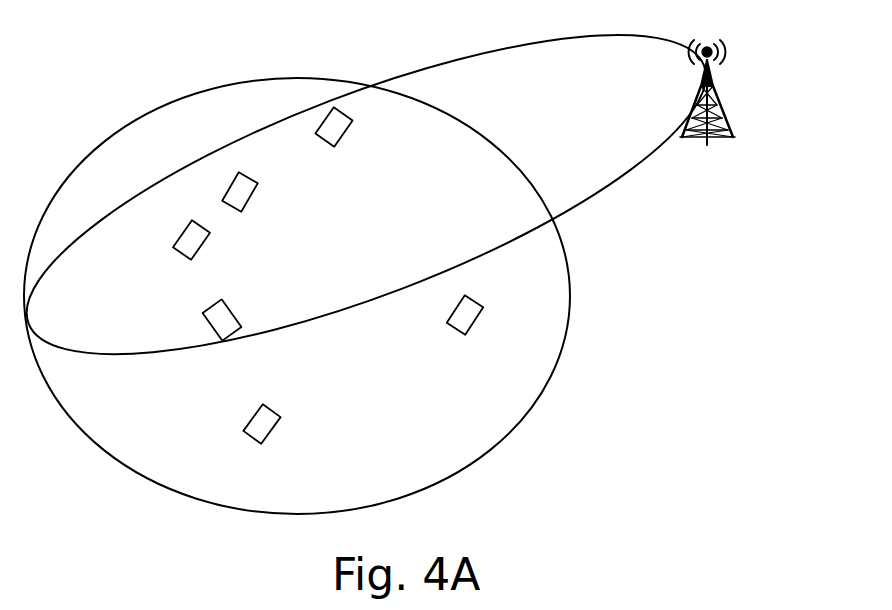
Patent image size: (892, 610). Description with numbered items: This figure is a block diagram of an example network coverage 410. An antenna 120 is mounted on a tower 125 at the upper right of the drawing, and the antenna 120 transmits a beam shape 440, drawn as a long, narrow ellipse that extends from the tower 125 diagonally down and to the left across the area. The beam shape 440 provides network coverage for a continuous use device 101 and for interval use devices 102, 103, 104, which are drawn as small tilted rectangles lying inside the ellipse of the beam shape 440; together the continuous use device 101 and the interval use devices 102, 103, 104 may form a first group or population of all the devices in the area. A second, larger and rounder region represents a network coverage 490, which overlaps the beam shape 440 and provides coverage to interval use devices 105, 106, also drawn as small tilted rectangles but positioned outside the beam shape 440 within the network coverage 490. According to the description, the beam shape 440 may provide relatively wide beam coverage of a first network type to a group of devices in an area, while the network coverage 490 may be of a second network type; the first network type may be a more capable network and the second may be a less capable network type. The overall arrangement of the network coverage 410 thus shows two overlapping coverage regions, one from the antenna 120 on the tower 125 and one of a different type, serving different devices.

The network coverage 410 is at (100, 79).
The continuous use device 101 is at (202, 312).
The interval use device 102 is at (210, 232).
The interval use device 103 is at (258, 181).
The interval use device 104 is at (353, 118).
The interval use device 105 is at (256, 416).
The interval use device 106 is at (453, 304).
The antenna 120 is at (731, 46).
The tower 125 is at (722, 108).
The beam shape 440 is at (622, 178).
The network coverage 490 is at (545, 392).